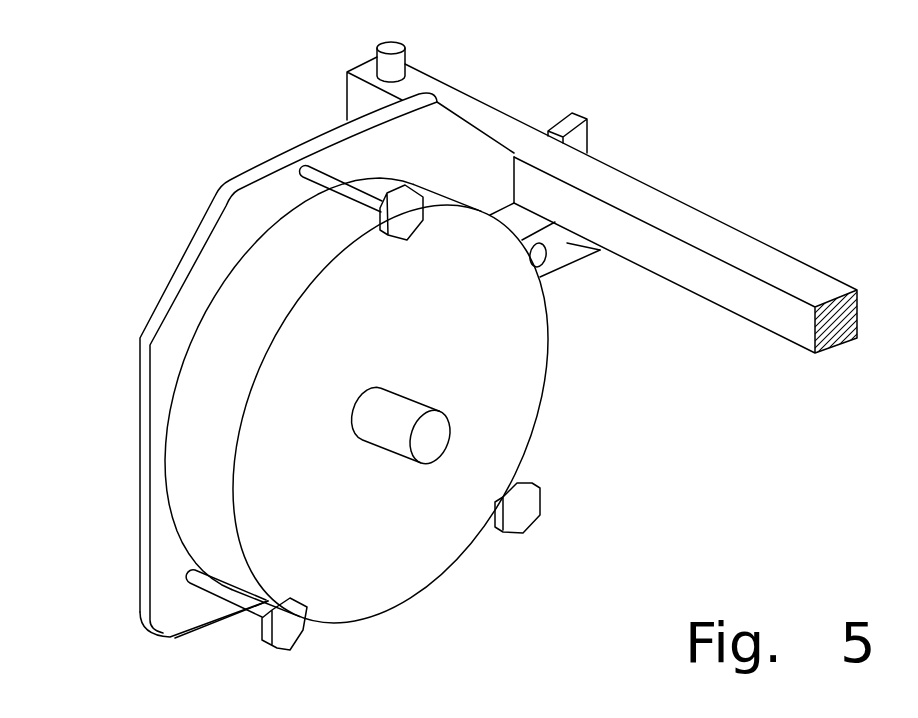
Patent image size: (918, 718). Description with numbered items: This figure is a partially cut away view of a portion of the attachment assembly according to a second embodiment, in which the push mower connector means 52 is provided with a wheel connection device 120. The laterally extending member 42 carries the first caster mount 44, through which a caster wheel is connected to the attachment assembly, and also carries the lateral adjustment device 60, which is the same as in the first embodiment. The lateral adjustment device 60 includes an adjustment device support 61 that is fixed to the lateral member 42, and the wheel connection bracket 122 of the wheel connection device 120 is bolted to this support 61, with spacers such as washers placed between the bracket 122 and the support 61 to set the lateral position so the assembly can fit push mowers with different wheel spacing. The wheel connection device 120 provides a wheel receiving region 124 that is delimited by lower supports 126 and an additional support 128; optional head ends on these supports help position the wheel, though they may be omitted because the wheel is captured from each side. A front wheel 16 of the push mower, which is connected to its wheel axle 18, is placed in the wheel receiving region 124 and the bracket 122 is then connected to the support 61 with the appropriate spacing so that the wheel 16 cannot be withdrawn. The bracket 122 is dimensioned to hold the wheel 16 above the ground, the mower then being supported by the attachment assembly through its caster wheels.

The wheel 16 is at (405, 585).
The wheel axle 18 is at (430, 438).
The laterally extending member 42 is at (660, 207).
The first caster mount 44 is at (397, 75).
The push mower connector means 52 is at (322, 102).
The lateral adjustment device 60 is at (584, 297).
The adjustment device support 61 is at (570, 253).
The wheel connection device 120 is at (227, 657).
The wheel connection bracket 122 is at (190, 253).
The wheel receiving region 124 is at (200, 505).
The lower support 126 is at (293, 628).
The additional support 128 is at (272, 175).